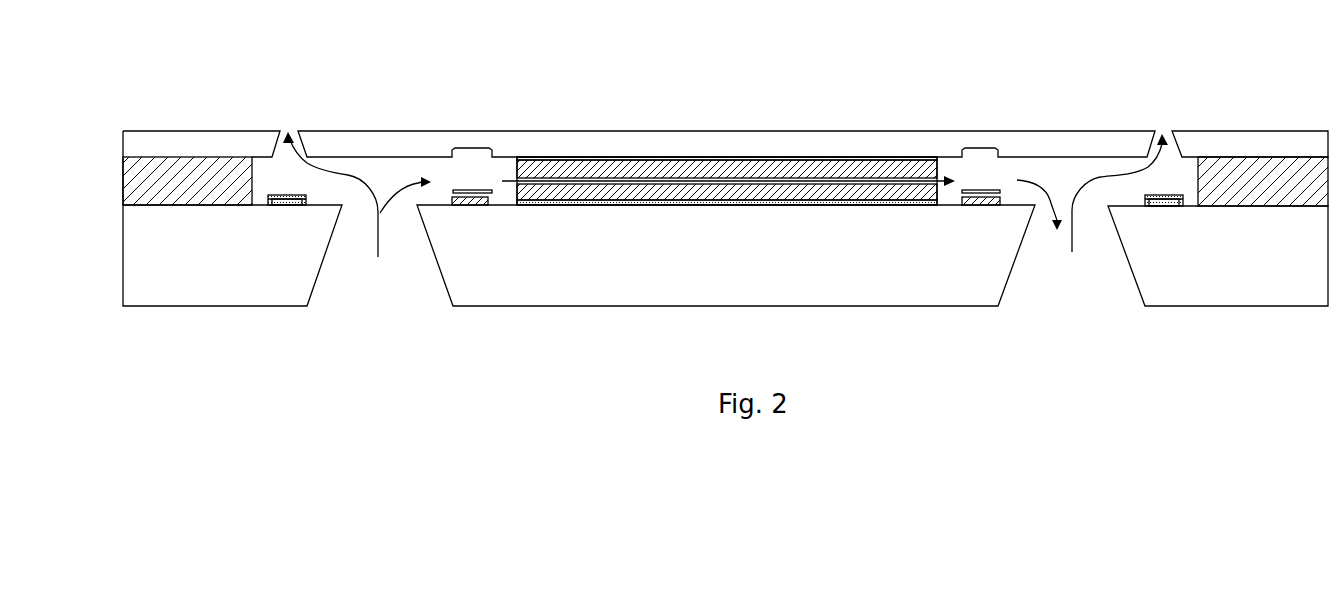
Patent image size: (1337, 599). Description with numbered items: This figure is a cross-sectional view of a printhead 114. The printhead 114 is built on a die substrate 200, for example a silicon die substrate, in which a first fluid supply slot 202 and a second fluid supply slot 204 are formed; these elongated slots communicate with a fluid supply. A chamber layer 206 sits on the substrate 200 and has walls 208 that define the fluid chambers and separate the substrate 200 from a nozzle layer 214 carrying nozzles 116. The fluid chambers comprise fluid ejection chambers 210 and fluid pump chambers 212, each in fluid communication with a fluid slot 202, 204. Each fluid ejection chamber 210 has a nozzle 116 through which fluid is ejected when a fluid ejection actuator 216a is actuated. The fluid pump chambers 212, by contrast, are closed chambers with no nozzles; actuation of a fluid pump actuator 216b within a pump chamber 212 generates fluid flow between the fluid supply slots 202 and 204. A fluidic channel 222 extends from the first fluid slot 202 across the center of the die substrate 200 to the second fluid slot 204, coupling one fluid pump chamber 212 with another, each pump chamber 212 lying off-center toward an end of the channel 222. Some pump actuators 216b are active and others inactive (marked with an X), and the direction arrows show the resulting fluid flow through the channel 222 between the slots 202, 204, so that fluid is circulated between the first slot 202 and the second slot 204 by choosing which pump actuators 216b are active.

The printhead 114 is at (157, 70).
The nozzle 116 is at (278, 124).
The die substrate 200 is at (123, 252).
The first fluid supply slot 202 is at (413, 315).
The second fluid supply slot 204 is at (1034, 315).
The chamber layer 206 is at (110, 183).
The wall 208 is at (200, 198).
The fluid ejection chamber 210 is at (726, 186).
The fluid pump chamber 212 is at (726, 180).
The nozzle layer 214 is at (548, 131).
The fluid ejection actuator 216a is at (287, 207).
The fluid pump actuator 216b is at (472, 208).
The fluidic channel 222 is at (753, 190).